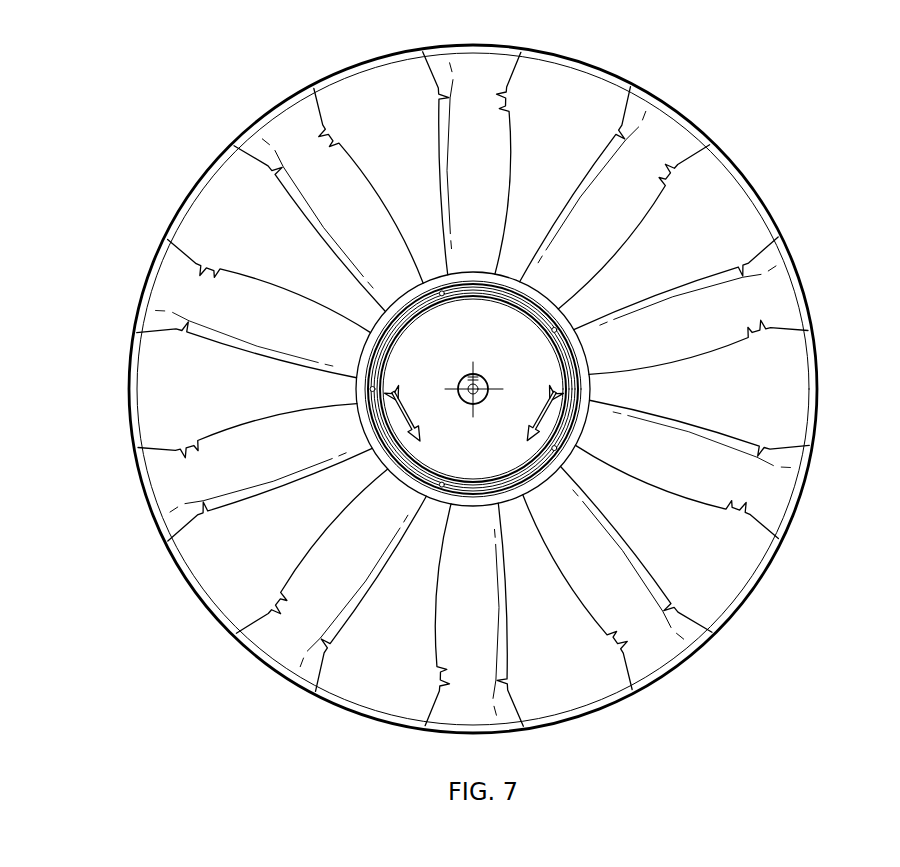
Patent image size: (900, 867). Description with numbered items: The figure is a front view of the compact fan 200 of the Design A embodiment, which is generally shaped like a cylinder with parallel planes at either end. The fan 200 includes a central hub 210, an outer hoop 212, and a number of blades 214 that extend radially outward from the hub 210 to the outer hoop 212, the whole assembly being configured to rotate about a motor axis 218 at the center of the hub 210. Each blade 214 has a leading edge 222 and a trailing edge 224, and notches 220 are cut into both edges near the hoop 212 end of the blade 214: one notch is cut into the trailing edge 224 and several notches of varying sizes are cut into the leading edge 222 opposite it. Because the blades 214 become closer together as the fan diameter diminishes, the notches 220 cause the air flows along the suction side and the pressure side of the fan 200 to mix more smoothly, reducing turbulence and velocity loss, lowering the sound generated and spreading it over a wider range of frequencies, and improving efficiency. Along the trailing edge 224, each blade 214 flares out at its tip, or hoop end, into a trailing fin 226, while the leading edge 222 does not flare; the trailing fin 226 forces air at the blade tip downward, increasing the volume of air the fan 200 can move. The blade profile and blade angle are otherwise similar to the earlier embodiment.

The fan 200 is at (152, 168).
The hub 210 is at (510, 337).
The outer hoop 212 is at (565, 56).
The blade 214 is at (238, 448).
The motor axis 218 is at (480, 404).
The notches 220 is at (675, 624).
The leading edge 222 is at (312, 558).
The trailing edge 224 is at (325, 640).
The trailing fin 226 is at (788, 437).